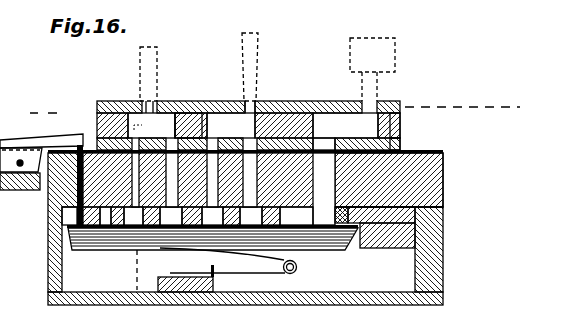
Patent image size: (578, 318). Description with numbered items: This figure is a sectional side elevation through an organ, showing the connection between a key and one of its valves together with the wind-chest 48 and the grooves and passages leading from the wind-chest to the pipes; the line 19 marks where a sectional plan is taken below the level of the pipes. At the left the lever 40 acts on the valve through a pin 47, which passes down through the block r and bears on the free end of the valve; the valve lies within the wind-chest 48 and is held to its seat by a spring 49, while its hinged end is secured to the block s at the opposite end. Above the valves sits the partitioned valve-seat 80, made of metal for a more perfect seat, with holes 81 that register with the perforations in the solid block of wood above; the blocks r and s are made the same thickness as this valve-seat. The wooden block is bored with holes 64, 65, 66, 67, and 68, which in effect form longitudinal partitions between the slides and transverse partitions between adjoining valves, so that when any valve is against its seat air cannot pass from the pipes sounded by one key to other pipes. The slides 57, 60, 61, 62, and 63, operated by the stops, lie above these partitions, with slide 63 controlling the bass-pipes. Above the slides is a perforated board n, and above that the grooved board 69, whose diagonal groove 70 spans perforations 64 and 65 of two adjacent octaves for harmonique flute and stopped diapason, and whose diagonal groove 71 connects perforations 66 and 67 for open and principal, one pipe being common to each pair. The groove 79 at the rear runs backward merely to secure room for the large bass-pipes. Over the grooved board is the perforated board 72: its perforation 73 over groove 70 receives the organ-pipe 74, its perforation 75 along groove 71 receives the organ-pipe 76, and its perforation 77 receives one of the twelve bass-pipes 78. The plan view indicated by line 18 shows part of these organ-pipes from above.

The section line 19 is at (272, 110).
The lever 40 is at (41, 155).
The pin 47 is at (78, 193).
The wind-chest 48 is at (245, 227).
The spring 49 is at (158, 219).
The slide 57 is at (96, 133).
The slide 60 is at (192, 114).
The slide 61 is at (248, 148).
The slide 62 is at (275, 147).
The slide 63 is at (312, 152).
The hole or perforation 64 is at (132, 178).
The hole or perforation 65 is at (178, 178).
The hole or perforation 66 is at (218, 178).
The hole or perforation 67 is at (257, 178).
The hole or perforation 68 is at (324, 189).
The grooved board 69 is at (400, 121).
The diagonal groove 70 is at (151, 125).
The diagonal groove 71 is at (231, 125).
The perforated board 72 is at (116, 101).
The perforation 73 is at (158, 102).
The organ-pipe 74 is at (148, 62).
The section line 18 is at (148, 99).
The perforation 75 is at (250, 112).
The organ-pipe 76 is at (250, 48).
The perforation 77 is at (392, 102).
The bass-pipe 78 is at (372, 69).
The groove 79 is at (345, 126).
The partitioned valve-seat 80 is at (112, 231).
The hole 81 is at (137, 216).
The perforated board n is at (400, 137).
The block r is at (77, 218).
The block s is at (381, 227).